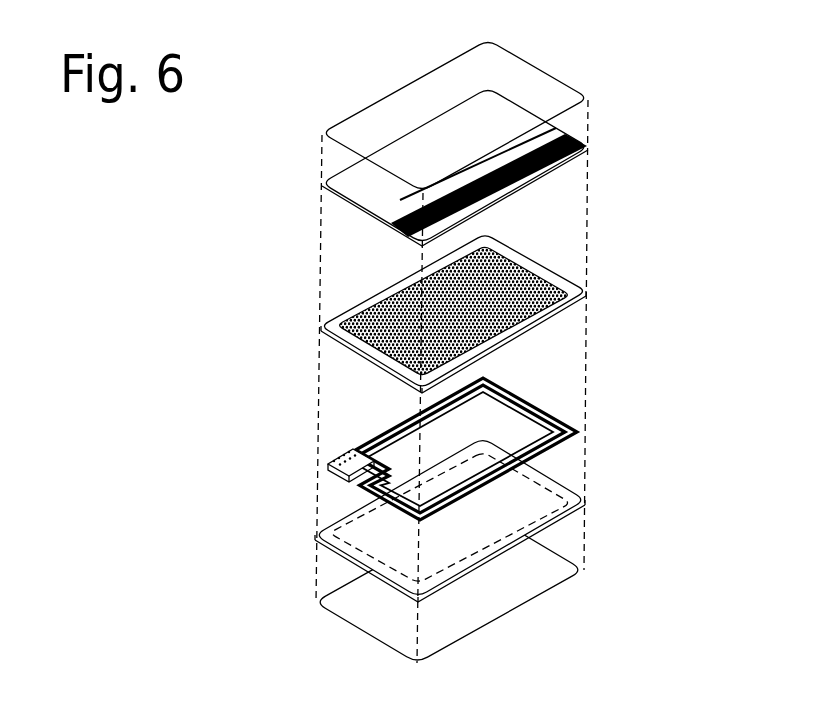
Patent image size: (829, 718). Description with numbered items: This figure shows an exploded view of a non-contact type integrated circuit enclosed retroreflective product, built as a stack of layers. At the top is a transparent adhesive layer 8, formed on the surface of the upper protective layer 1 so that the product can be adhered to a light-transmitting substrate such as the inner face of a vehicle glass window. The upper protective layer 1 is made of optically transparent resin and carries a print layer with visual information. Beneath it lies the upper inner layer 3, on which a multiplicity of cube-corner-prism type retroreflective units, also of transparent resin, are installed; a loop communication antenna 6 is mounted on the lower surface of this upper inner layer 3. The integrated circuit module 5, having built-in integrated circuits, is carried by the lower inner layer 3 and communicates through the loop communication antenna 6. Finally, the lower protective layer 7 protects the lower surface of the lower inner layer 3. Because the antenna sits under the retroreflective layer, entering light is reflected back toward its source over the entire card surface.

The transparent adhesive layer 8 is at (555, 70).
The upper protective layer 1 is at (585, 130).
The inner layer 3 is at (535, 250).
The loop communication antenna 6 is at (533, 395).
The integrated circuit module 5 is at (340, 452).
The lower protective layer 7 is at (527, 610).